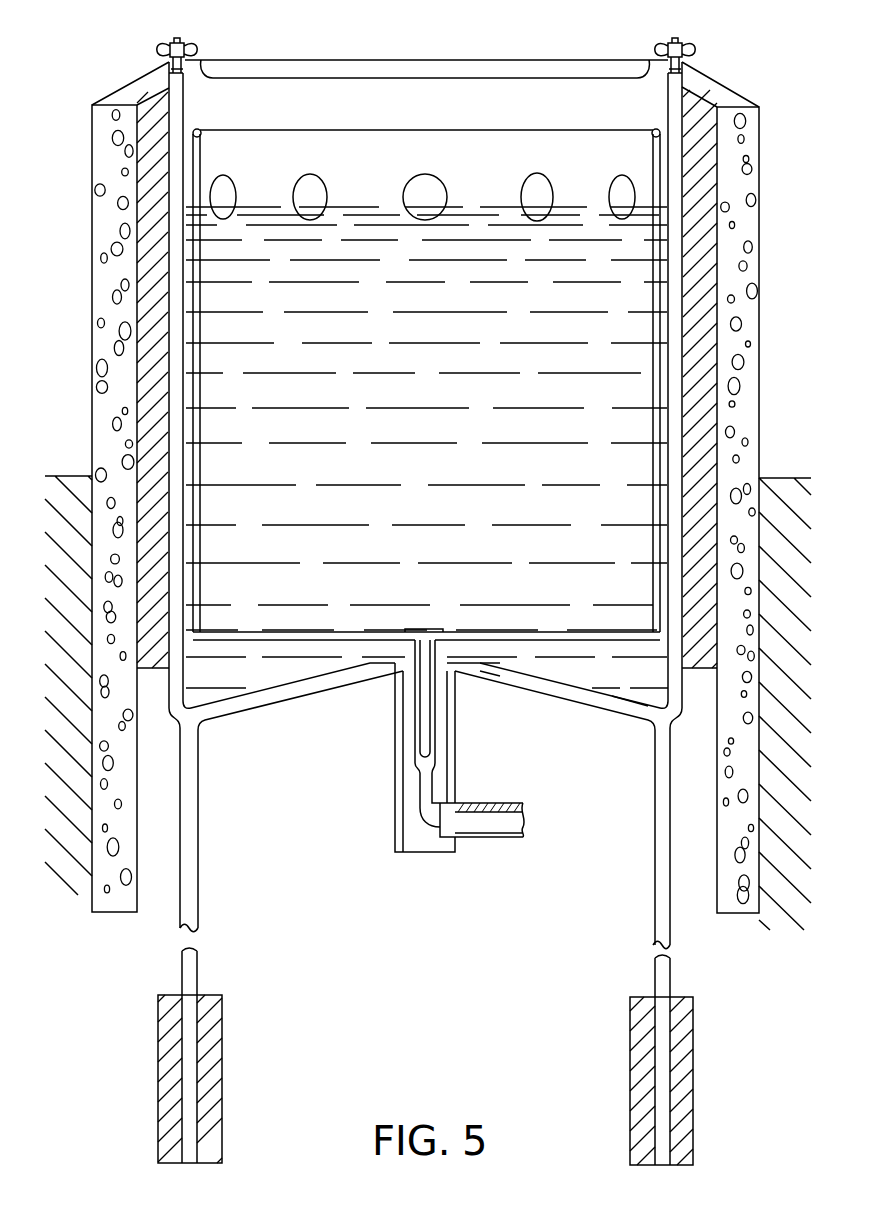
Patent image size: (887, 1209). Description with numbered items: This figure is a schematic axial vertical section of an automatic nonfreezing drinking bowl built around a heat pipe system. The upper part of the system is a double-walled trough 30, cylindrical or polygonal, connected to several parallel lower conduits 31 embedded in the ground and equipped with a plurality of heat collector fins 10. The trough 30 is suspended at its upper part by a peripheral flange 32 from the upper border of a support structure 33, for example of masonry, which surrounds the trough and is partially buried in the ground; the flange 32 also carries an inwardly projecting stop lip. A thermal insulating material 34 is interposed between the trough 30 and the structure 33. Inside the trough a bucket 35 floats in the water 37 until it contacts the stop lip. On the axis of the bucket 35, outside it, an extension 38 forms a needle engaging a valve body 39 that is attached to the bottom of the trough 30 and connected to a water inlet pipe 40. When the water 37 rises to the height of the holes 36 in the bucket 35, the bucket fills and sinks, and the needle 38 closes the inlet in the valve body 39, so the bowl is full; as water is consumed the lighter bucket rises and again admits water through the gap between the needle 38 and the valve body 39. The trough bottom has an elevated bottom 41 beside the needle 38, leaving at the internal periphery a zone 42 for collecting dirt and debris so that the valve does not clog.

The heat collector fins 10 is at (166, 1063).
The trough 30 is at (510, 684).
The lower conduits 31 is at (190, 886).
The peripheral flange 32 is at (712, 76).
The support structure 33 is at (762, 236).
The thermal insulating material 34 is at (710, 318).
The bucket 35 is at (567, 644).
The holes 36 is at (410, 190).
The water 37 is at (215, 697).
The extension 38 is at (423, 726).
The valve body 39 is at (393, 767).
The water inlet pipe 40 is at (483, 840).
The elevated bottom 41 is at (493, 664).
The zone 42 is at (641, 697).